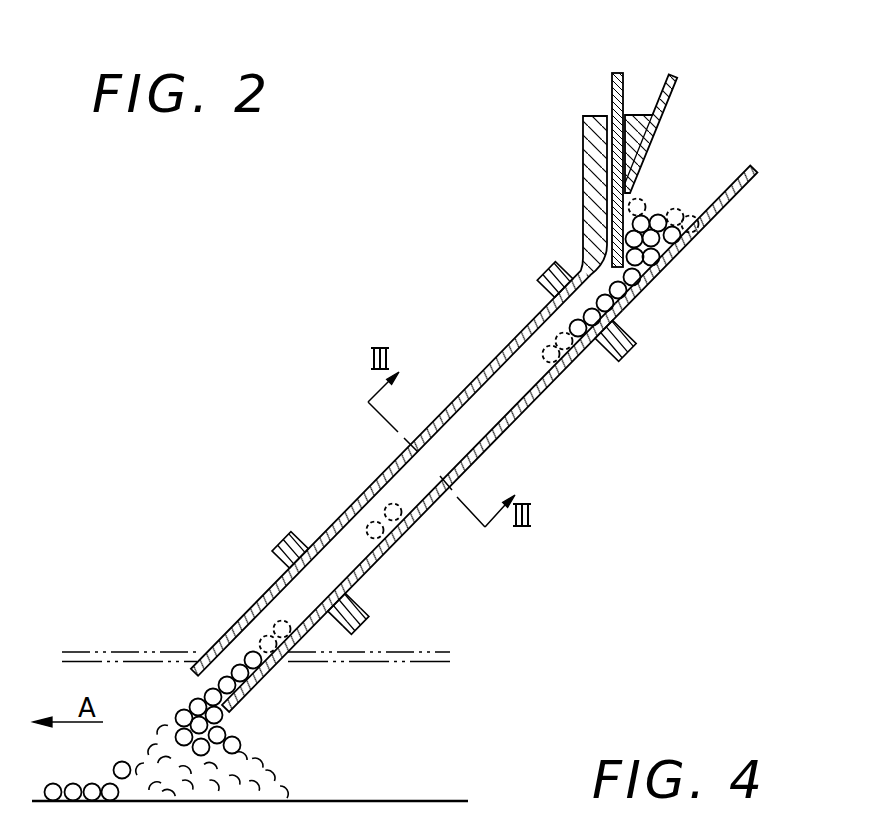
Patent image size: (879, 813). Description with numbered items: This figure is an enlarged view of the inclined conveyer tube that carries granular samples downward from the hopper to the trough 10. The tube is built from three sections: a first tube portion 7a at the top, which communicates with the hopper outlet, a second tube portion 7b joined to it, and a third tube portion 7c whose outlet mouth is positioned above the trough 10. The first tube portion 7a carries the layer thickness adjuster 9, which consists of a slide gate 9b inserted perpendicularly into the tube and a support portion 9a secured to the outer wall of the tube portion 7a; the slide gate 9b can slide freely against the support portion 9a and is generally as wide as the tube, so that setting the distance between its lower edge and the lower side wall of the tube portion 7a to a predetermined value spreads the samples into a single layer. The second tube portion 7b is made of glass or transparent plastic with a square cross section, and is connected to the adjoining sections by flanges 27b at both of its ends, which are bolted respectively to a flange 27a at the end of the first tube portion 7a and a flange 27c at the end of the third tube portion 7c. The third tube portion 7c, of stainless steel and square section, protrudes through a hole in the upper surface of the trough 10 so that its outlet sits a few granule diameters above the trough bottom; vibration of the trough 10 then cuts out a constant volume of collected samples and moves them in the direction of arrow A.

The first tube portion 7a is at (738, 202).
The second tube portion 7b is at (515, 420).
The third tube portion 7c is at (252, 616).
The layer thickness adjuster 9 is at (571, 102).
The support portion 9a is at (590, 172).
The slide gate 9b is at (622, 92).
The trough 10 is at (94, 651).
The flange 27a is at (632, 338).
The flange 27b is at (607, 366).
The flange 27c is at (348, 633).